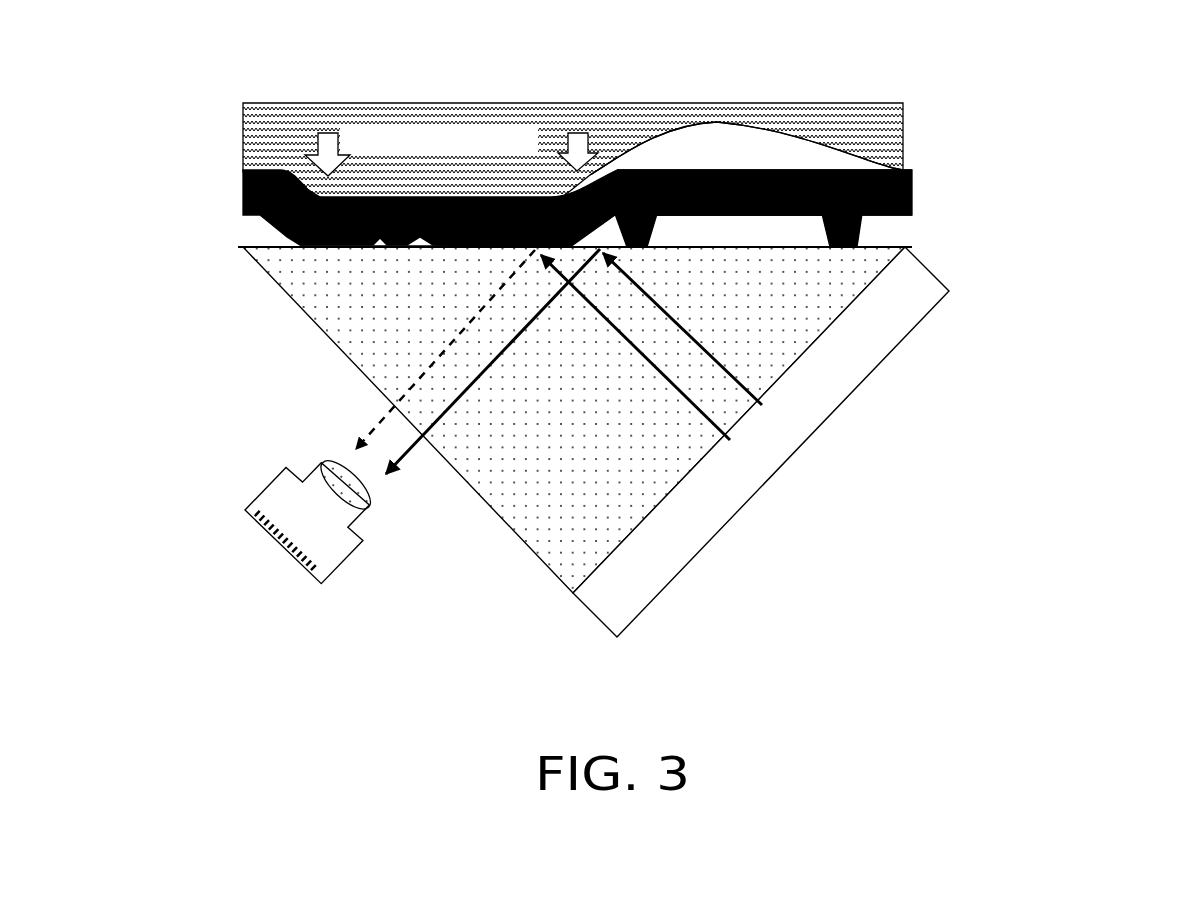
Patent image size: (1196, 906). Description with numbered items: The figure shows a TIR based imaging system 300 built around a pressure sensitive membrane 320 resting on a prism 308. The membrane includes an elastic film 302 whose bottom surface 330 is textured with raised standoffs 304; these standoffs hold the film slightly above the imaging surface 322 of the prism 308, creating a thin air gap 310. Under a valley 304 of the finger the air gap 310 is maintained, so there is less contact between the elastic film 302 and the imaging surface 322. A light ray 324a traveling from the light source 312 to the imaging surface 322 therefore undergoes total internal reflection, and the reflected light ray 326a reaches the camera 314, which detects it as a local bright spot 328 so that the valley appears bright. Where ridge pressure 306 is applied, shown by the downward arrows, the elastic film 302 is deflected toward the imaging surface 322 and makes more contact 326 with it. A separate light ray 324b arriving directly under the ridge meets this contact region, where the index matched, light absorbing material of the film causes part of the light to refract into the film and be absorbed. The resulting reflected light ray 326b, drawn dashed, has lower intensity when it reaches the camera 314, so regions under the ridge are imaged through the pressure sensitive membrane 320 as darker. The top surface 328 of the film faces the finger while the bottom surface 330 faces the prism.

The TIR based imaging system 300 is at (212, 102).
The elastic film 302 is at (577, 208).
The raised standoffs 304 is at (962, 222).
The ridge pressure 306 is at (451, 152).
The prism 308 is at (574, 420).
The air gap 310 is at (739, 226).
The light source 312 is at (761, 442).
The camera 314 is at (318, 510).
The pressure sensitive membrane 320 is at (237, 172).
The imaging surface 322 is at (915, 248).
The light ray 324a is at (813, 419).
The light ray 324b is at (782, 450).
The more contact 326 is at (342, 235).
The reflected light ray 326a is at (443, 487).
The reflected light ray 326b is at (363, 423).
The local bright spot 328 is at (917, 172).
The bottom surface 330 is at (917, 213).